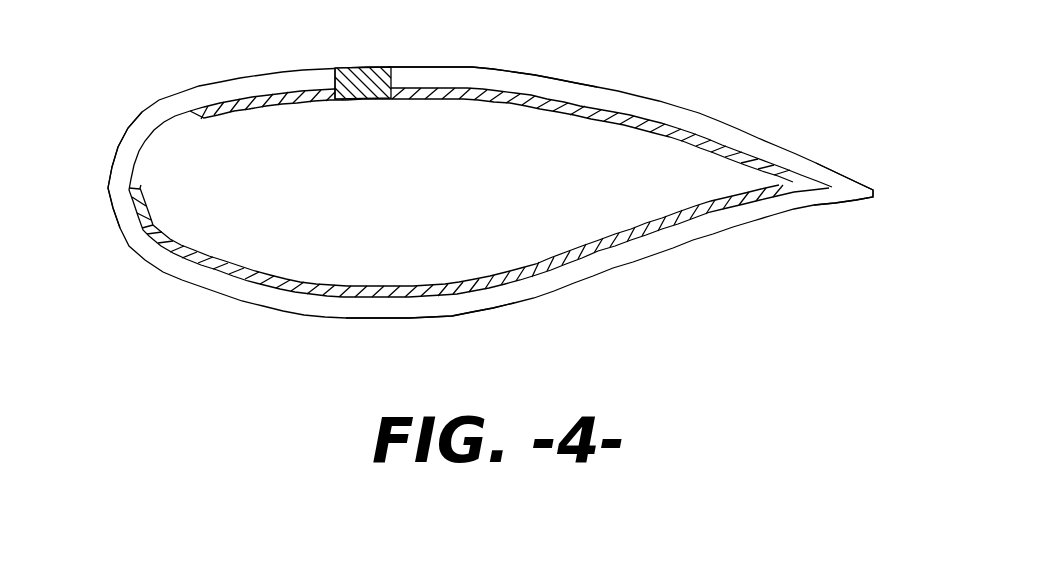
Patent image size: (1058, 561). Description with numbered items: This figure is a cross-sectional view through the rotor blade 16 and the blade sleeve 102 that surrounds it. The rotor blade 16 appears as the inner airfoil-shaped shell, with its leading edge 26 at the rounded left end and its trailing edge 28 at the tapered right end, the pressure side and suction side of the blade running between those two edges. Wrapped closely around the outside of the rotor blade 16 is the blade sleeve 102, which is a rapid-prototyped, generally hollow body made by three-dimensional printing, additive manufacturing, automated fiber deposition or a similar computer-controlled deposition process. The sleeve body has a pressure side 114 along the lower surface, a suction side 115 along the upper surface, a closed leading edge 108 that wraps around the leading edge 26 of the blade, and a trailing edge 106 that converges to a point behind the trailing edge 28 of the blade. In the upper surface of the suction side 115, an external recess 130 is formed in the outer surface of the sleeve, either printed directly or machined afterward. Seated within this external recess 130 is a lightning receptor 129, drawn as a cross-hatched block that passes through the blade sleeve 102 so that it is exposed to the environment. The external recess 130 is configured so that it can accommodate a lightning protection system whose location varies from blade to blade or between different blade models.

The rotor blade 16 is at (650, 122).
The leading edge 26 is at (140, 184).
The trailing edge 28 is at (803, 180).
The blade sleeve 102 is at (220, 83).
The trailing edge 106 is at (850, 187).
The closed leading edge 108 is at (110, 173).
The pressure side 114 is at (433, 318).
The suction side 115 is at (490, 70).
The lightning receptor 129 is at (368, 65).
The external recess 130 is at (330, 80).